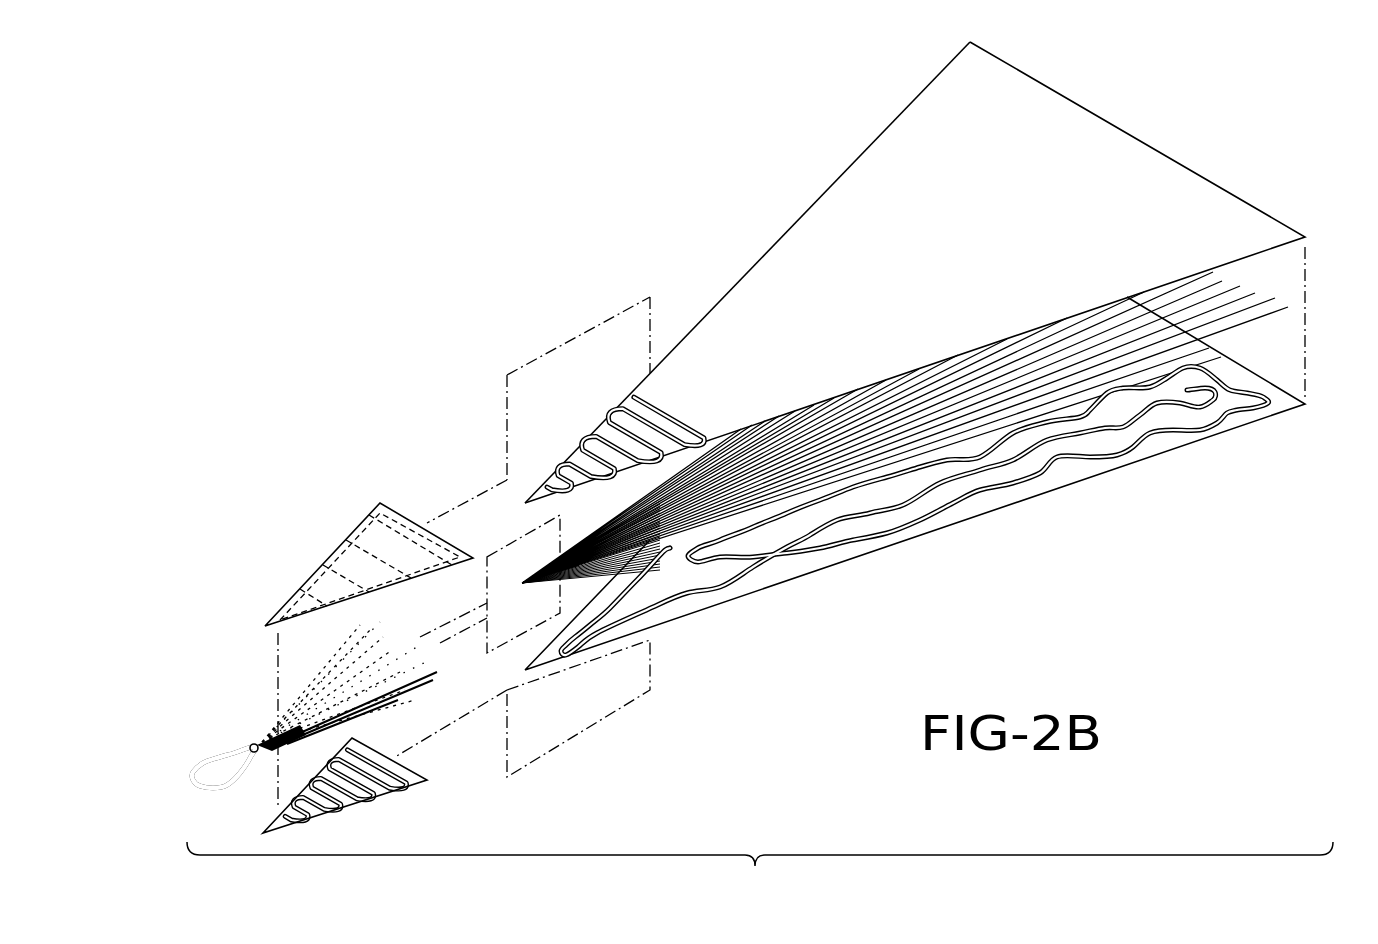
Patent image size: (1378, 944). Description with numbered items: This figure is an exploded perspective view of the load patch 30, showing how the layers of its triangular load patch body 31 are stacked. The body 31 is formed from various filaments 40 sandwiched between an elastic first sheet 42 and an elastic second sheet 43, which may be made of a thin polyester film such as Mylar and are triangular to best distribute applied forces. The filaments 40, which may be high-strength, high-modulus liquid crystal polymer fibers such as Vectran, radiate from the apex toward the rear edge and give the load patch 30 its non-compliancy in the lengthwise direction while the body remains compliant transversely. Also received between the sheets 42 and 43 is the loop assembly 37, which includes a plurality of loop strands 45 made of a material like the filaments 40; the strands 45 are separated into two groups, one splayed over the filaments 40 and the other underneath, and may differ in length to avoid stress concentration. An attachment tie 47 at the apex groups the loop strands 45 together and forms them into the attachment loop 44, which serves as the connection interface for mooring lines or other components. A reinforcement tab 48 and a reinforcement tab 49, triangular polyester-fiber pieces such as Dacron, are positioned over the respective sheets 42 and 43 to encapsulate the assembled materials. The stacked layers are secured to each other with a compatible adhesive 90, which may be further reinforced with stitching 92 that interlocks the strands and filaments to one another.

The load patch 30 is at (686, 163).
The load patch body 31 is at (745, 256).
The first sheet 42 is at (848, 203).
The filaments 40 is at (1265, 307).
The second sheet 43 is at (1033, 460).
The adhesive 90 is at (615, 437).
The reinforcement tab 48 is at (328, 588).
The stitching 92 is at (378, 547).
The loop strands 45 is at (345, 656).
The loop assembly 37 is at (207, 743).
The attachment loop 44 is at (193, 785).
The attachment tie 47 is at (251, 745).
The reinforcement tab 49 is at (408, 776).